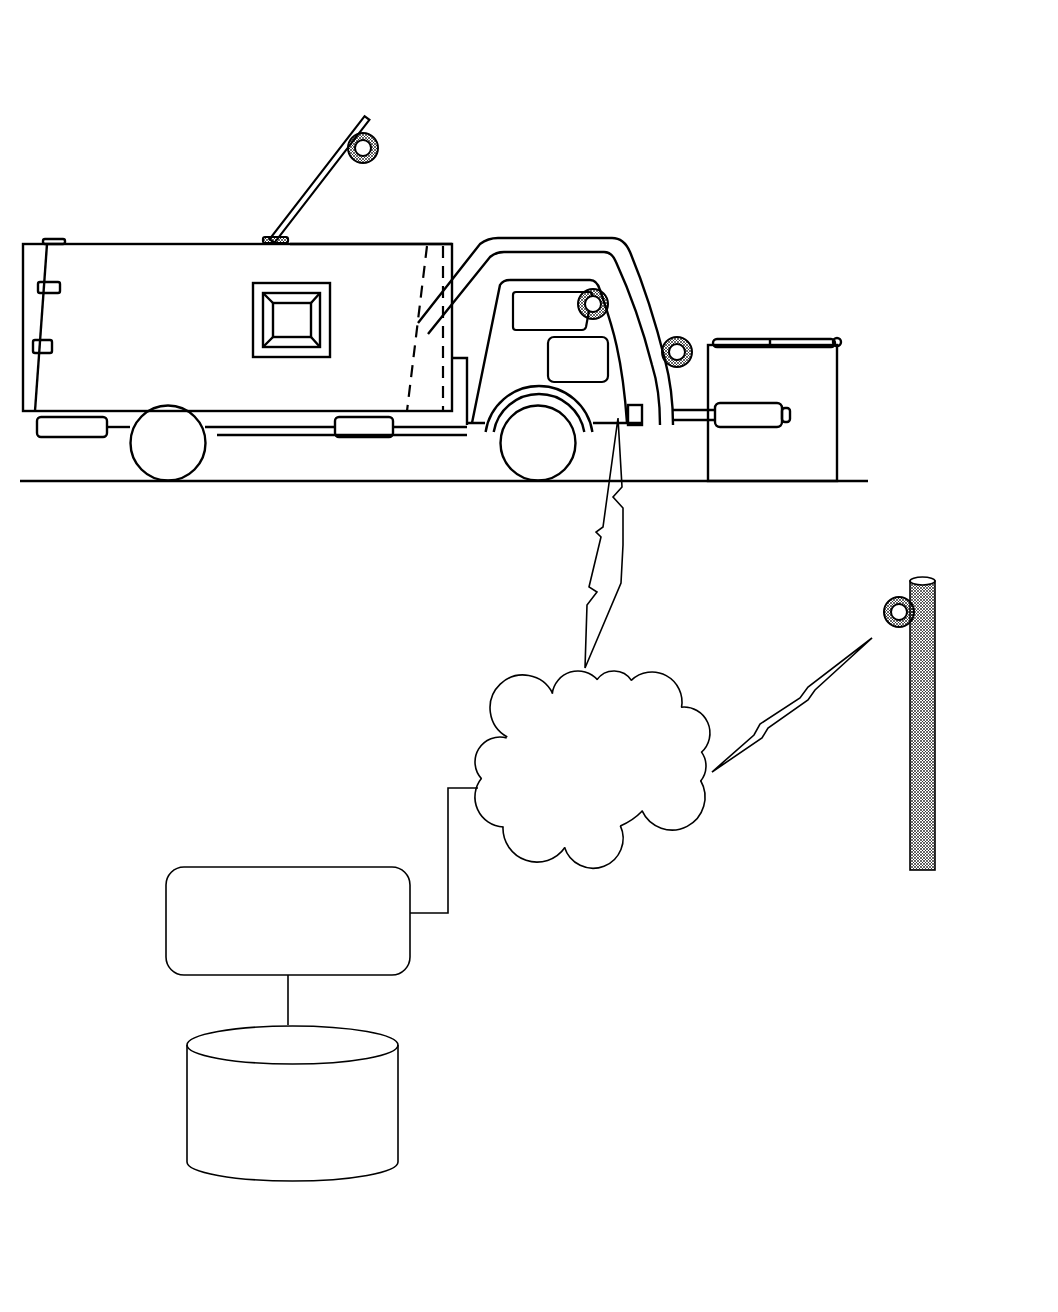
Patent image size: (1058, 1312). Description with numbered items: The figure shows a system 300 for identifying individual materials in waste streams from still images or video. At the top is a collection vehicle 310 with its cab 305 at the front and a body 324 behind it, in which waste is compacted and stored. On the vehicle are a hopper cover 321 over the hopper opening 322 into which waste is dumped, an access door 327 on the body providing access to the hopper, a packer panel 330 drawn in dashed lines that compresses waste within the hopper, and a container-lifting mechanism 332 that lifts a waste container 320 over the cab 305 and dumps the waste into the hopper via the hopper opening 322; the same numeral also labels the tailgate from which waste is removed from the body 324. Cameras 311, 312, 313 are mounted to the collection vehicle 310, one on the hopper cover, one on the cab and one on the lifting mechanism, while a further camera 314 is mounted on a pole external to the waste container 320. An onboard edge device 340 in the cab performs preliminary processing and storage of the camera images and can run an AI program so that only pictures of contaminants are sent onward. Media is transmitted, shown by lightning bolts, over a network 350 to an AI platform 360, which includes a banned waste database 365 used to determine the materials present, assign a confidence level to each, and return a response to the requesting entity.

The system 300 is at (122, 89).
The cab 305 is at (552, 311).
The collection vehicle 310 is at (123, 290).
The camera 311 is at (375, 138).
The camera 312 is at (602, 298).
The camera 313 is at (679, 337).
The camera 314 is at (887, 603).
The waste container 320 is at (823, 383).
The hopper cover 321 is at (308, 193).
The hopper opening 322 is at (373, 243).
The body 324 is at (133, 332).
The access door 327 is at (295, 322).
The packer panel 330 is at (437, 255).
The container-lifting mechanism 332 is at (28, 255).
The onboard edge device 340 is at (600, 376).
The network 350 is at (658, 744).
The AI platform 360 is at (388, 904).
The banned waste database 365 is at (320, 1059).